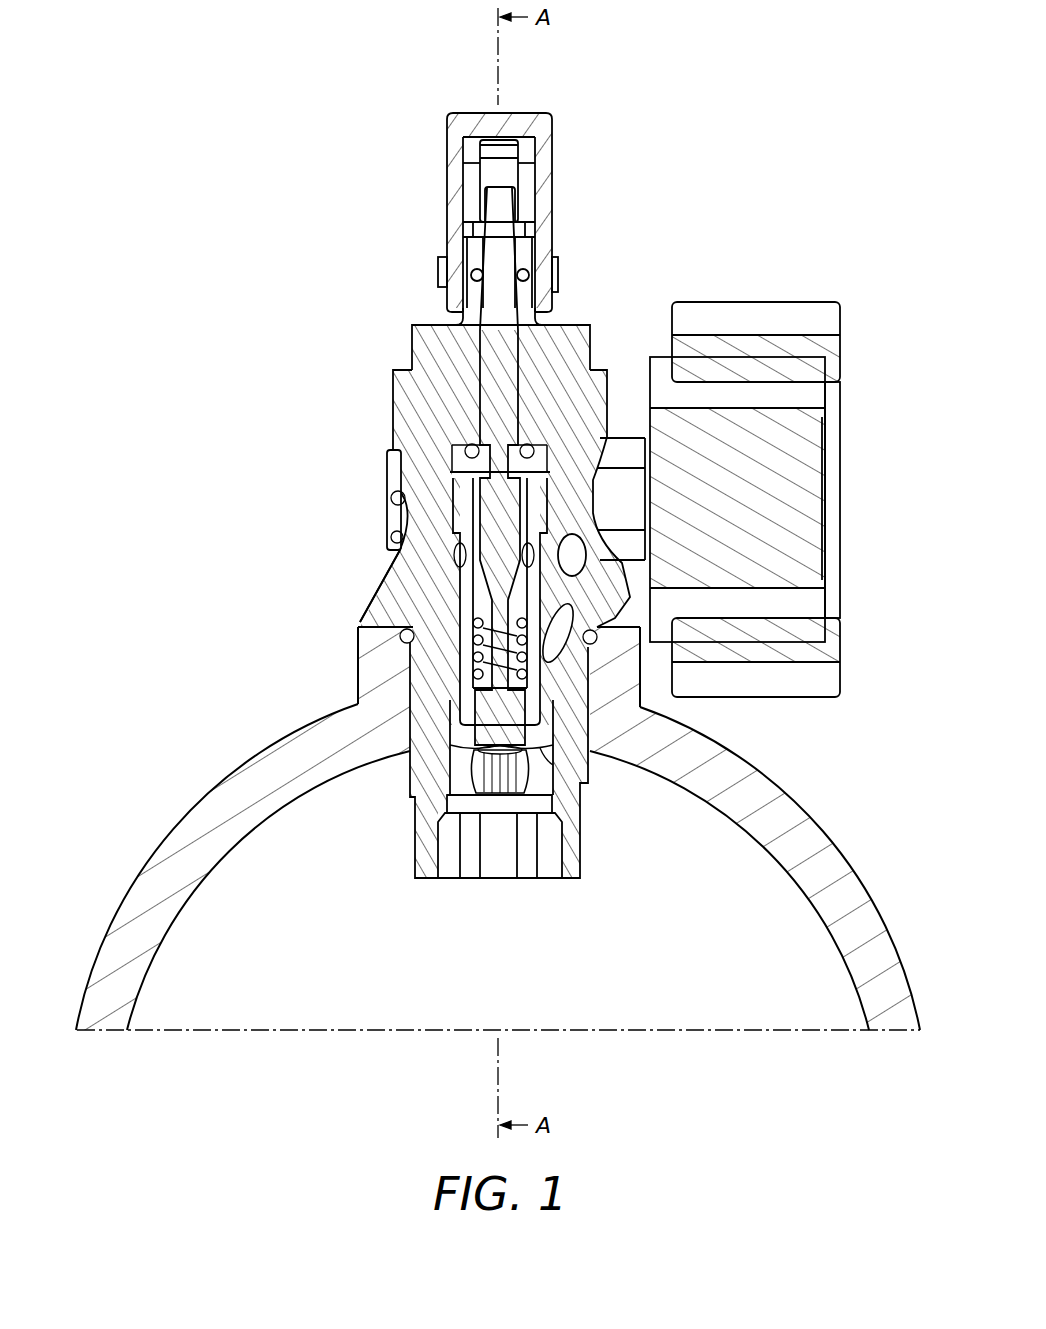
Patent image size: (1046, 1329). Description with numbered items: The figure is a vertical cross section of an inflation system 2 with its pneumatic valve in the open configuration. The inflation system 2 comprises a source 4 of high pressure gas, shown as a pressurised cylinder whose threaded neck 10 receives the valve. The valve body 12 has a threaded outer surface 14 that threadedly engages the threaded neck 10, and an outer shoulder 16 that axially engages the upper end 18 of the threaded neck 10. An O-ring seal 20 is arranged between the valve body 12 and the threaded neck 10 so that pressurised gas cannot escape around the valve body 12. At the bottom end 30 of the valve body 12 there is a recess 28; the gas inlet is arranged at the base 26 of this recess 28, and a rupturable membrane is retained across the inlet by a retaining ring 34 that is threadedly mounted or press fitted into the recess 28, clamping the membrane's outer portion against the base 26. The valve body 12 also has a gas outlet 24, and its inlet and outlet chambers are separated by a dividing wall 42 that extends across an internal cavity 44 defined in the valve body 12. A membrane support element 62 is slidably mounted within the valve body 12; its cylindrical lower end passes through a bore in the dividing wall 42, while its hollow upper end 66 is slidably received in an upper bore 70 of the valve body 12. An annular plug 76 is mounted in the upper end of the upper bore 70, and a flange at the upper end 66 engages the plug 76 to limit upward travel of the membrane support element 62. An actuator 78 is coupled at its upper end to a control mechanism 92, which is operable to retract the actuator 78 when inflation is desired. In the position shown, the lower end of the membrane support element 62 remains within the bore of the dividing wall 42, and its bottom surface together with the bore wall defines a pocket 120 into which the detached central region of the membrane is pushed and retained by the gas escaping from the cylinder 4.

The inflation system 2 is at (305, 216).
The source of high pressure gas 4 is at (812, 850).
The threaded neck 10 is at (410, 726).
The valve body 12 is at (530, 748).
The threaded outer surface 14 is at (590, 697).
The outer shoulder 16 is at (360, 628).
The upper end of the threaded neck 18 is at (360, 618).
The O-ring seal 20 is at (600, 632).
The gas outlet 24 is at (577, 548).
The base of the recess 26 is at (543, 783).
The recess 28 is at (470, 870).
The bottom end of the valve body 30 is at (423, 862).
The retaining ring 34 is at (542, 808).
The dividing wall 42 is at (463, 752).
The internal cavity 44 is at (457, 713).
The membrane support element 62 is at (470, 490).
The hollow upper end of the membrane support element 66 is at (468, 520).
The upper bore 70 is at (455, 600).
The annular plug 76 is at (578, 339).
The actuator 78 is at (502, 297).
The control mechanism 92 is at (577, 128).
The pocket 120 is at (540, 750).